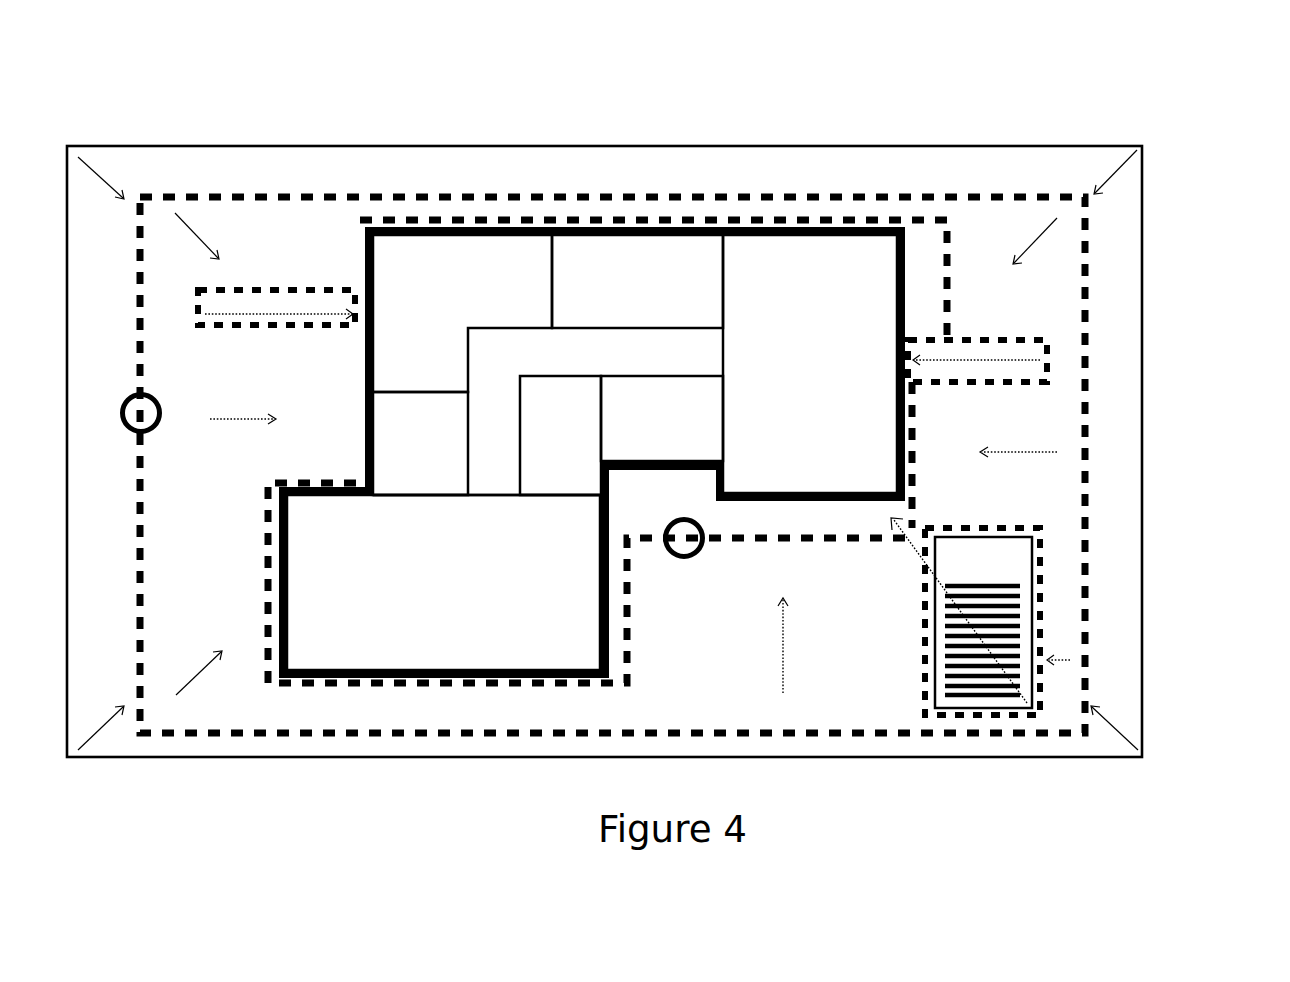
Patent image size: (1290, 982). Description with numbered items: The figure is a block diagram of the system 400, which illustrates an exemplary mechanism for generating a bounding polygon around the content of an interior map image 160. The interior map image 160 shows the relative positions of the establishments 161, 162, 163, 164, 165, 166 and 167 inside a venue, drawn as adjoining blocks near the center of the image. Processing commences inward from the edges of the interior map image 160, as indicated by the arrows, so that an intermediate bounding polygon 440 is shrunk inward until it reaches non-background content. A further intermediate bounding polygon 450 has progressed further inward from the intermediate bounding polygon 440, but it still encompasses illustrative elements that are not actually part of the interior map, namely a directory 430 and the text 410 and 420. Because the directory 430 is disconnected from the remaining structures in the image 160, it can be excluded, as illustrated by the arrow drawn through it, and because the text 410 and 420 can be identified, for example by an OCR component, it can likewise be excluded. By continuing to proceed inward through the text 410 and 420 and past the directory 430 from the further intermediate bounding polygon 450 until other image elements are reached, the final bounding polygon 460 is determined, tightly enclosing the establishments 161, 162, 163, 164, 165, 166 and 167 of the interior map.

The system 400 is at (1150, 93).
The interior map image 160 is at (376, 146).
The text 410 is at (233, 313).
The text 420 is at (958, 353).
The directory 430 is at (966, 537).
The intermediate bounding polygon 440 is at (140, 473).
The further intermediate bounding polygon 450 is at (628, 609).
The final bounding polygon 460 is at (700, 466).
The establishment 161 is at (560, 435).
The establishment 162 is at (662, 418).
The establishment 163 is at (810, 364).
The establishment 164 is at (637, 281).
The establishment 165 is at (462, 313).
The establishment 166 is at (420, 443).
The establishment 167 is at (444, 582).